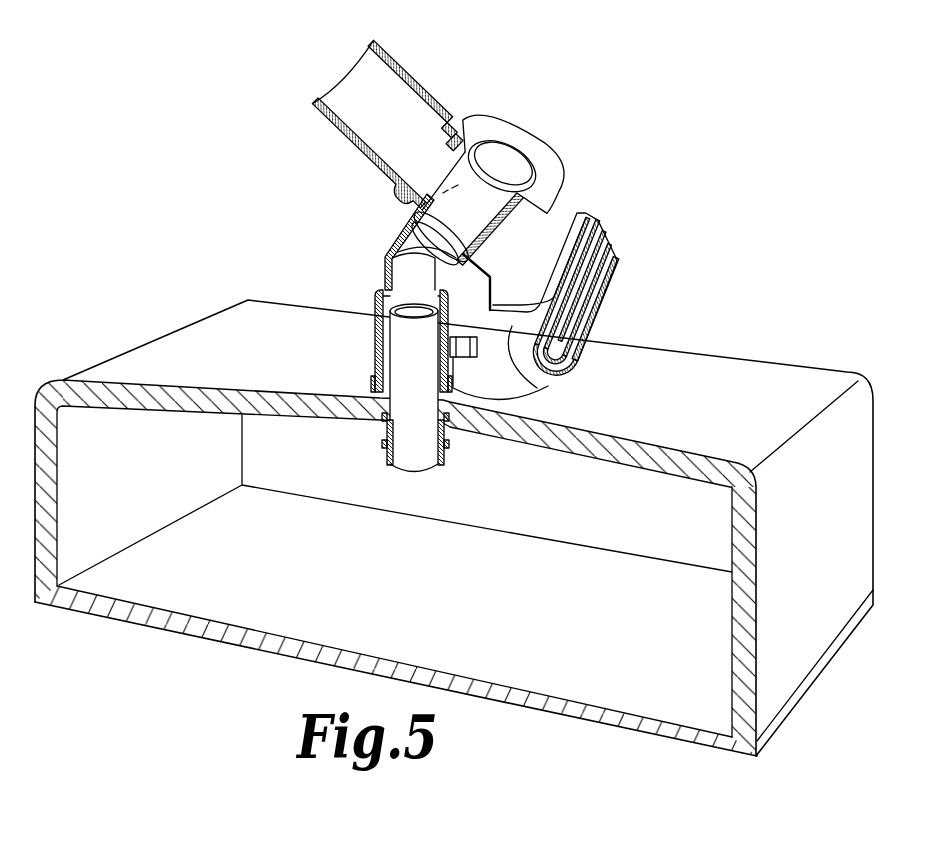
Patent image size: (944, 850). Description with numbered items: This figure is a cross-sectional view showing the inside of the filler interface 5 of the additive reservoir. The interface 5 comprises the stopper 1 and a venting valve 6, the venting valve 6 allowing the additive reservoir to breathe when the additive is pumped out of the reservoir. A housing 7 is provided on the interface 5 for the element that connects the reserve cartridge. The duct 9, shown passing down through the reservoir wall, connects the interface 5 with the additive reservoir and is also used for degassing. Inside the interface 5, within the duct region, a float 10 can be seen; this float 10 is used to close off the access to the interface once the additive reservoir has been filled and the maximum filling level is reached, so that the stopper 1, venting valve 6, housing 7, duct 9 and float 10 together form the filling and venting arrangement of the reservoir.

The stopper 1 is at (513, 157).
The filler interface 5 is at (366, 357).
The venting valve 6 is at (347, 123).
The housing 7 is at (493, 233).
The duct 9 is at (392, 460).
The float 10 is at (395, 322).